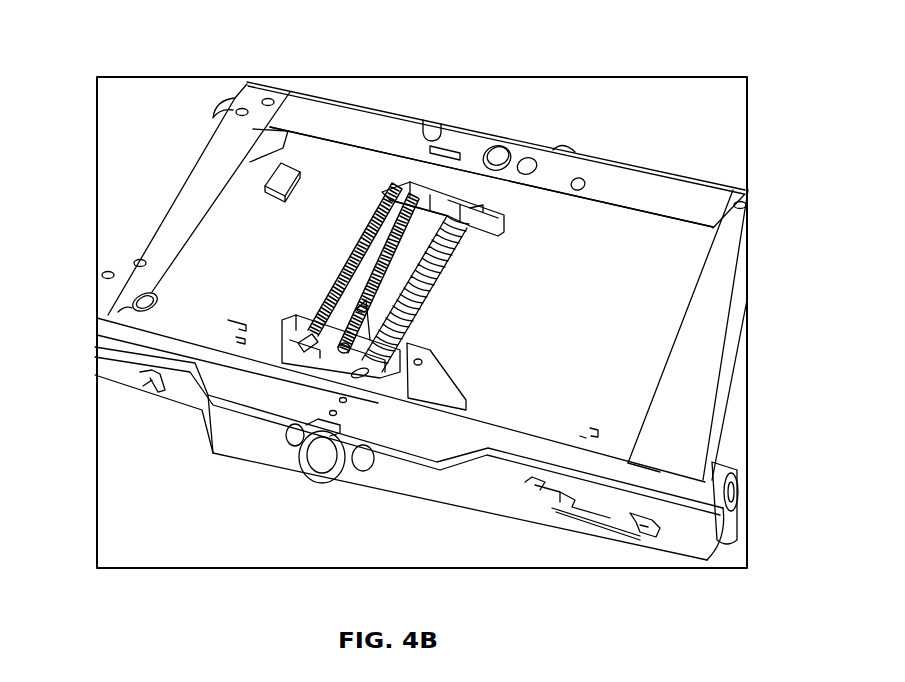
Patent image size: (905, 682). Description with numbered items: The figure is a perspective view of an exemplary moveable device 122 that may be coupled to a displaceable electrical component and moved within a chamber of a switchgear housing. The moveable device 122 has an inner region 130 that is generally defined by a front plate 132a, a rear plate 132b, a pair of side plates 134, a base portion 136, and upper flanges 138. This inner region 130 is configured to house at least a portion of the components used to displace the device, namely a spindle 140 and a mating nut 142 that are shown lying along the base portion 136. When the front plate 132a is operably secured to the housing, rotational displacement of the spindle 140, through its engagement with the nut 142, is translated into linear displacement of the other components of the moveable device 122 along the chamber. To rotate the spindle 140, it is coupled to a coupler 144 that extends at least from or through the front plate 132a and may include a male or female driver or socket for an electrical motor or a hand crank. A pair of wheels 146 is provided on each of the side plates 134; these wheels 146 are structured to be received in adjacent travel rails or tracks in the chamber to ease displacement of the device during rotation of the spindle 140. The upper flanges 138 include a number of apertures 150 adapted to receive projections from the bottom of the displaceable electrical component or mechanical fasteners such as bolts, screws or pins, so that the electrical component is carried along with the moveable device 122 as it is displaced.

The moveable device 122 is at (418, 105).
The inner region 130 is at (575, 334).
The front plate 132a is at (693, 546).
The rear plate 132b is at (625, 188).
The side plates 134 is at (145, 200).
The base portion 136 is at (362, 176).
The upper flanges 138 is at (195, 175).
The spindle 140 is at (462, 256).
The nut 142 is at (378, 390).
The coupler 144 is at (323, 477).
The wheels 146 is at (225, 102).
The apertures 150 is at (268, 100).